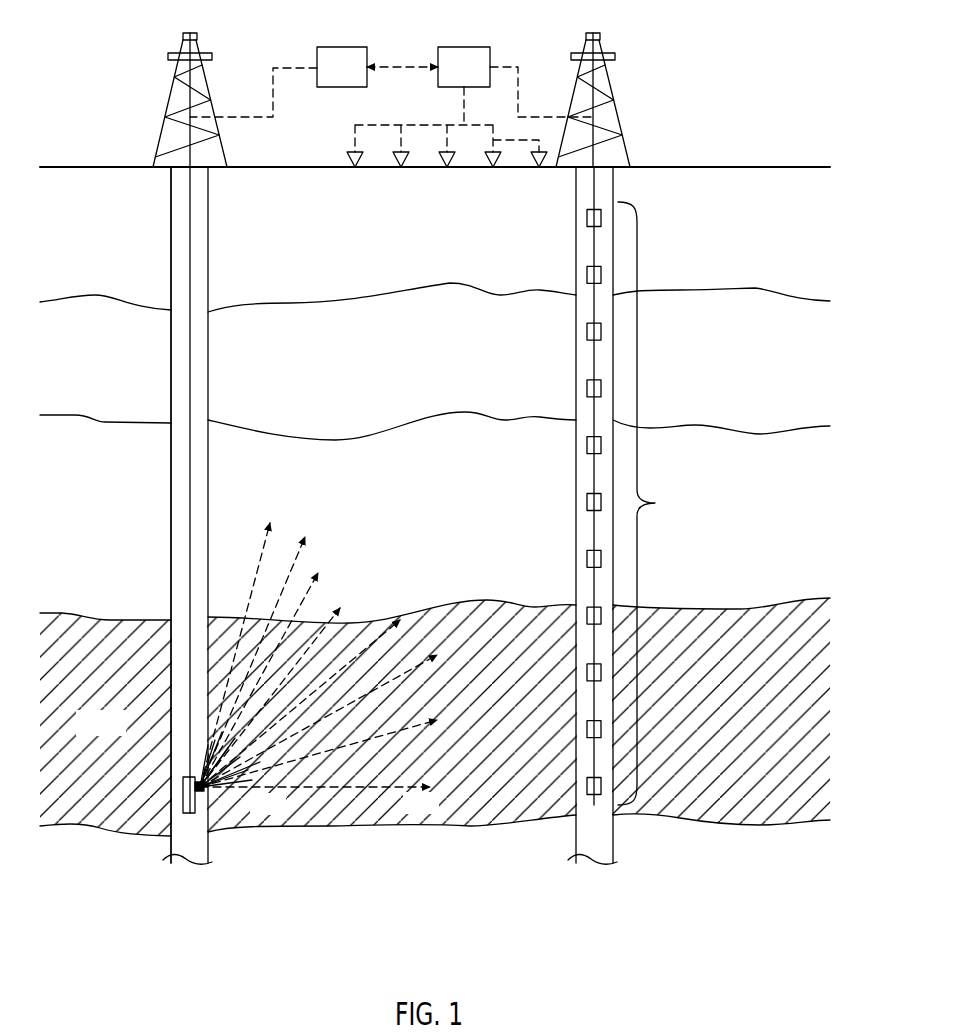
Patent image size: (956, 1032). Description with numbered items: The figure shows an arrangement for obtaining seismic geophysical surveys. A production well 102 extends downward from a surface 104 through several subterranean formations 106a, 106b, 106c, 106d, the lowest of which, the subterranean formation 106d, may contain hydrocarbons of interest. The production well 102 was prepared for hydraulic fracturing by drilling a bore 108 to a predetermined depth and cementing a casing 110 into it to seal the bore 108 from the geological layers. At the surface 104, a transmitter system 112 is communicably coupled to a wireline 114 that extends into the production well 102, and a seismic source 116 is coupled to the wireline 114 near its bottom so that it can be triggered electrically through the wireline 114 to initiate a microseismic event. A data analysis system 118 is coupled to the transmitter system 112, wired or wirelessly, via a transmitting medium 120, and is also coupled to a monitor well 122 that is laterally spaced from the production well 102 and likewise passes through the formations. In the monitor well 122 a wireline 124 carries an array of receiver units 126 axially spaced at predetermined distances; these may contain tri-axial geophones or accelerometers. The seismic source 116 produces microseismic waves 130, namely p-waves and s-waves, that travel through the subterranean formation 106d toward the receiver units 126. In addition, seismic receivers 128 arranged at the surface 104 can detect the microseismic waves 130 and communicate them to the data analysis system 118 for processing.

The production well 102 is at (160, 142).
The surface 104 is at (283, 167).
The subterranean formation 106a is at (122, 241).
The subterranean formation 106b is at (120, 372).
The subterranean formation 106c is at (120, 524).
The subterranean formation 106d is at (120, 733).
The bore 108 is at (196, 232).
The casing 110 is at (208, 268).
The transmitter system 112 is at (357, 78).
The wireline 114 is at (190, 373).
The seismic source 116 is at (200, 800).
The data analysis system 118 is at (479, 78).
The transmitting medium 120 is at (400, 67).
The monitor well 122 is at (627, 144).
The wireline 124 is at (590, 250).
The receiver units 126 is at (655, 503).
The seismic receivers 128 is at (540, 168).
The microseismic waves 130 is at (387, 683).